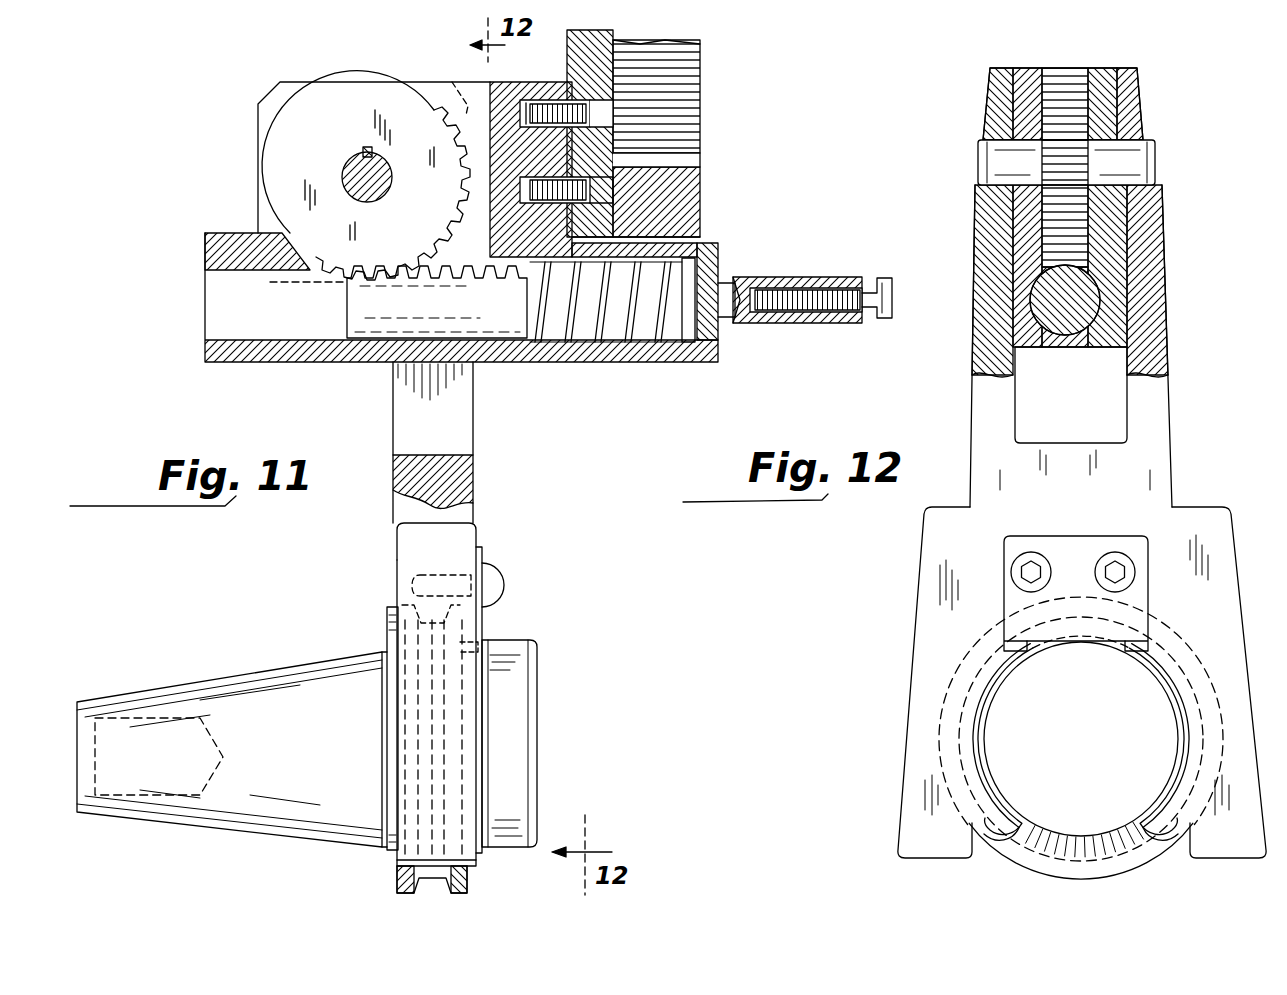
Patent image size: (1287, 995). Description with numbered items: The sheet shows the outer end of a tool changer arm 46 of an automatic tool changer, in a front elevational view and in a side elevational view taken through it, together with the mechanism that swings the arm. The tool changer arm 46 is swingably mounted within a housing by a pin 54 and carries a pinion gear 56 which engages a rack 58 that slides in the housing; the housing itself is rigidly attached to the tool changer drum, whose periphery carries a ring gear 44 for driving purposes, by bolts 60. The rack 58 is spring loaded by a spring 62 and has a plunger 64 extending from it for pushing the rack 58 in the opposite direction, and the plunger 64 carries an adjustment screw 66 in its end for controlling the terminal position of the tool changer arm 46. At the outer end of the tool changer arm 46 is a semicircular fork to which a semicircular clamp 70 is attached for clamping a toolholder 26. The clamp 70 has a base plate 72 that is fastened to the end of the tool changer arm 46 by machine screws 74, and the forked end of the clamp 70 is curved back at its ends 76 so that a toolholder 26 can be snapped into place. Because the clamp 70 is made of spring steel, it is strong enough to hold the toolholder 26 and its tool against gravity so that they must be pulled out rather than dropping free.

In FIG. 11, the toolholder 26 is at (296, 815).
In FIG. 11, the ring gear 44 is at (690, 190).
In FIG. 11, the tool changer arm 46 is at (412, 404).
In FIG. 11, the pin 54 is at (355, 172).
In FIG. 12, the pin 54 is at (1140, 152).
In FIG. 11, the pinion gear 56 is at (442, 107).
In FIG. 12, the pinion gear 56 is at (1080, 172).
In FIG. 11, the rack 58 is at (410, 268).
In FIG. 12, the rack 58 is at (1085, 295).
In FIG. 11, the bolts 60 is at (549, 105).
In FIG. 11, the spring 62 is at (620, 318).
In FIG. 11, the plunger 64 is at (805, 277).
In FIG. 11, the adjustment screw 66 is at (885, 278).
In FIG. 11, the semicircular clamp 70 is at (515, 690).
In FIG. 11, the base plate 72 is at (484, 622).
In FIG. 12, the base plate 72 is at (1128, 597).
In FIG. 11, the machine screws 74 is at (492, 585).
In FIG. 12, the machine screws 74 is at (1110, 558).
In FIG. 11, the ends 76 is at (510, 850).
In FIG. 12, the ends 76 is at (1002, 826).